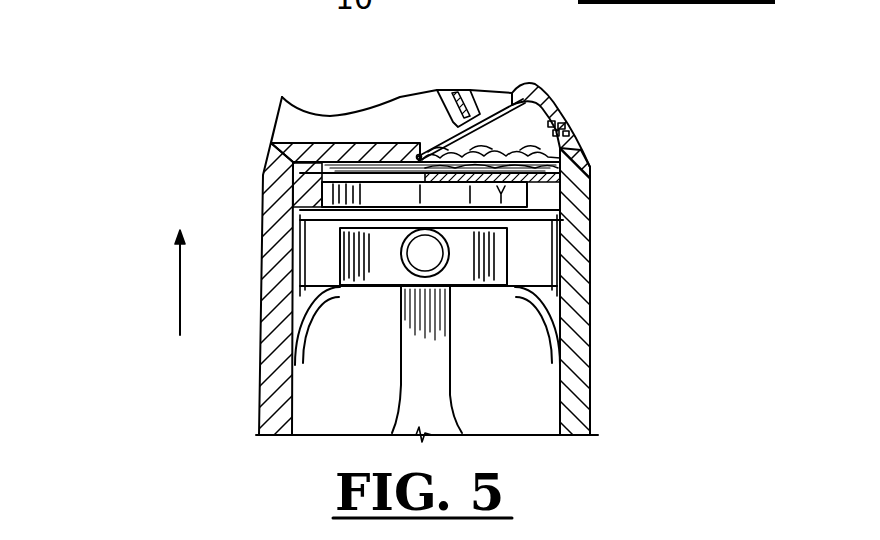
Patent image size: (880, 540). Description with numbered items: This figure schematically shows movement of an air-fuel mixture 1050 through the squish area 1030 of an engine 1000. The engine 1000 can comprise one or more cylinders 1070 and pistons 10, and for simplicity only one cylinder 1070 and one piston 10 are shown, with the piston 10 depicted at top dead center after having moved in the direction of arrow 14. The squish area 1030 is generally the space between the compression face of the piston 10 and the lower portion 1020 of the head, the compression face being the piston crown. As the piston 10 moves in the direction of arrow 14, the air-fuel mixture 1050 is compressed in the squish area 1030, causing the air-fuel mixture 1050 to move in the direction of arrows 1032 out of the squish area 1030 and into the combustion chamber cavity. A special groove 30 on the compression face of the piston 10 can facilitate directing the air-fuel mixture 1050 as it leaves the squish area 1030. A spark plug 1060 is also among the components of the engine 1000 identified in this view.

The piston 10 is at (533, 272).
The arrow 14 is at (178, 287).
The groove 30 is at (576, 140).
The engine 1000 is at (721, 198).
The lower portion of head 1020 is at (278, 142).
The squish area 1030 is at (352, 143).
The arrows 1032 is at (470, 165).
The air-fuel mixture 1050 is at (515, 160).
The spark plug 1060 is at (566, 116).
The cylinder 1070 is at (337, 385).